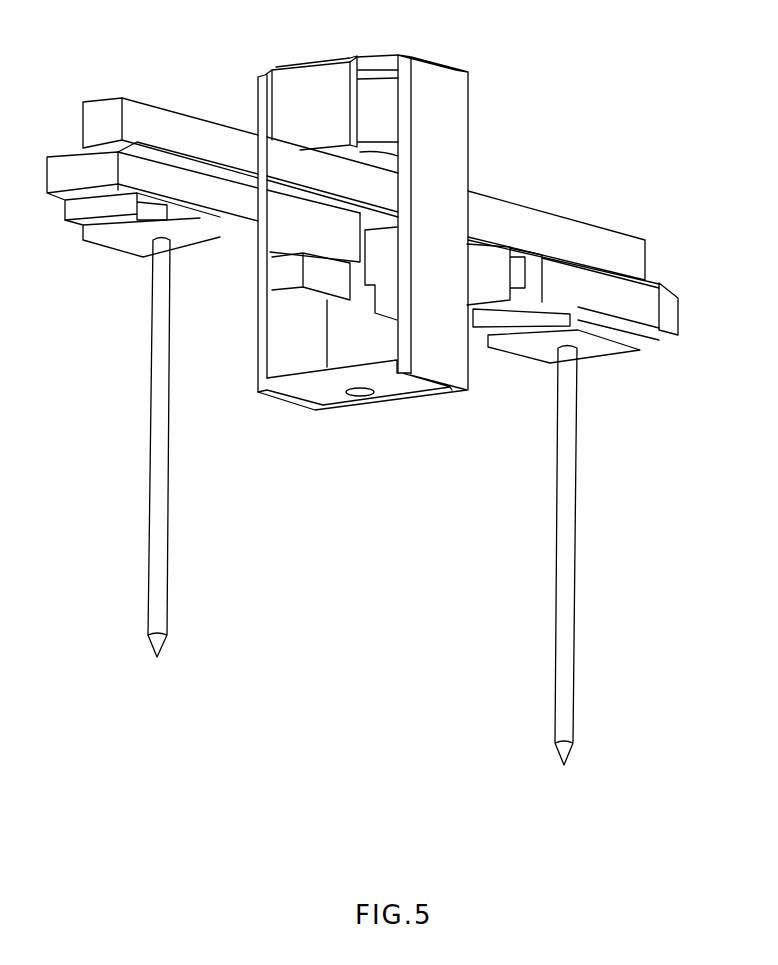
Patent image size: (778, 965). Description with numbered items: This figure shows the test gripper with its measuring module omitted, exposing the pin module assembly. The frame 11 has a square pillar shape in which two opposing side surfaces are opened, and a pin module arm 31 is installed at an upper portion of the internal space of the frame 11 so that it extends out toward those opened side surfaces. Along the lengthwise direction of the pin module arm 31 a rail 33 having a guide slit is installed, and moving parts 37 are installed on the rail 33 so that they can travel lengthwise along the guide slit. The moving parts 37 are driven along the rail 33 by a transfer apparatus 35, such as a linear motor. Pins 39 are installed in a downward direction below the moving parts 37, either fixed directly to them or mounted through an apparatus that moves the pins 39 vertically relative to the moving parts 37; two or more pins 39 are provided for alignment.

The frame 11 is at (441, 74).
The pin module arm 31 is at (592, 244).
The rail 33 is at (670, 318).
The transfer apparatus 35 is at (298, 230).
The moving parts 37 is at (602, 350).
The pins 39 is at (565, 542).